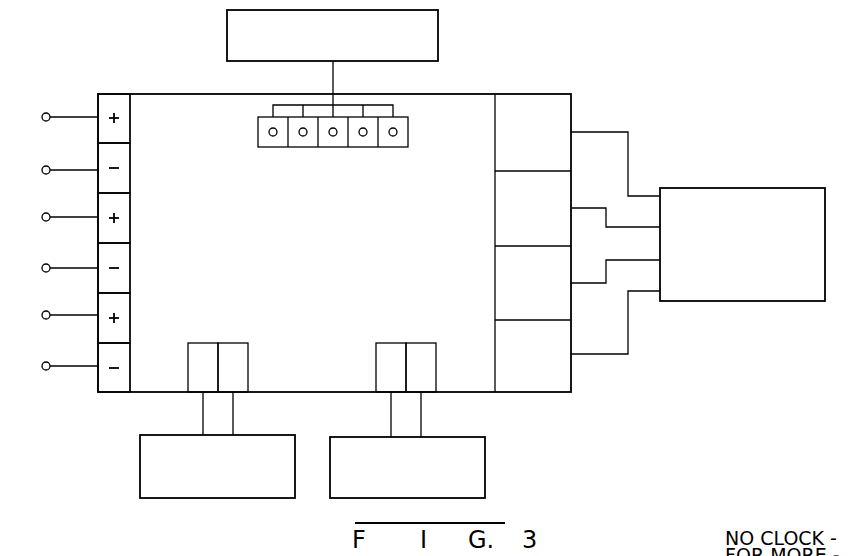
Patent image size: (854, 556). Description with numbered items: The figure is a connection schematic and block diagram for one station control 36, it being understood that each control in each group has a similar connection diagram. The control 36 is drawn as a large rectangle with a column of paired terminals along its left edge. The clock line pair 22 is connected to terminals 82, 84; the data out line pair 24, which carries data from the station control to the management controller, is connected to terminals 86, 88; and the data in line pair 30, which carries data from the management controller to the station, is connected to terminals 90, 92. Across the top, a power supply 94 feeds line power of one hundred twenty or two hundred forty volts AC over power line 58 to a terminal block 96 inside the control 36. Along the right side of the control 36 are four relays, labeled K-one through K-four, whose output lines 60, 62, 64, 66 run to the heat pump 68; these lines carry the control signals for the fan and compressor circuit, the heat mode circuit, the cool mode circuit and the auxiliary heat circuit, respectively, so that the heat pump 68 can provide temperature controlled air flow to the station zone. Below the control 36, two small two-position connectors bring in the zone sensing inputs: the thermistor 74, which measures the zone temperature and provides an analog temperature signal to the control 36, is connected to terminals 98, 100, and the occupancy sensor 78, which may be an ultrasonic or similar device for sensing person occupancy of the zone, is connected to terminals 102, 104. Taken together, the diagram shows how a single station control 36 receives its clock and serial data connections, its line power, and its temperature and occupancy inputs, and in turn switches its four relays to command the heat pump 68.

The clock line pair 22 is at (60, 217).
The data out line pair 24 is at (60, 117).
The data in line pair 30 is at (60, 315).
The station control 36 is at (148, 393).
The power line 58 is at (334, 77).
The fan and compressor control line 60 is at (592, 132).
The heat mode control line 62 is at (583, 208).
The cool mode control line 64 is at (580, 283).
The auxiliary heat control line 66 is at (598, 354).
The heat pump 68 is at (717, 301).
The thermistor 74 is at (485, 470).
The sensor 78 is at (138, 463).
The terminal 82 is at (98, 208).
The terminal 84 is at (98, 257).
The terminal 86 is at (98, 103).
The terminal 88 is at (98, 190).
The terminal 90 is at (98, 305).
The terminal 92 is at (98, 350).
The power supply 94 is at (438, 33).
The terminal block 96 is at (410, 133).
The terminal 98 is at (388, 395).
The terminal 100 is at (423, 395).
The terminal 102 is at (200, 395).
The terminal 104 is at (236, 395).